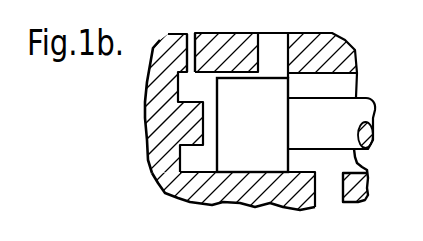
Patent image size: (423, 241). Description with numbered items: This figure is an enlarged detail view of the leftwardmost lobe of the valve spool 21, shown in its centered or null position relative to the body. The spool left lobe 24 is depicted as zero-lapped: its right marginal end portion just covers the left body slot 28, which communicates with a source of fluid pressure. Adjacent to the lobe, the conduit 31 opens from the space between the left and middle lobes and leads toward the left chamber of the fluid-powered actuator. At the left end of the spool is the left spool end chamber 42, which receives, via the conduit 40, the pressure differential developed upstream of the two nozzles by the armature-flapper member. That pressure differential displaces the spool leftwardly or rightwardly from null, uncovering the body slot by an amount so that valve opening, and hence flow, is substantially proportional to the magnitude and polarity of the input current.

The valve spool 21 is at (378, 98).
The spool left lobe 24 is at (258, 103).
The left body slot 28 is at (276, 43).
The conduit 31 is at (332, 190).
The conduit 40 is at (192, 42).
The left spool end chamber 42 is at (190, 159).